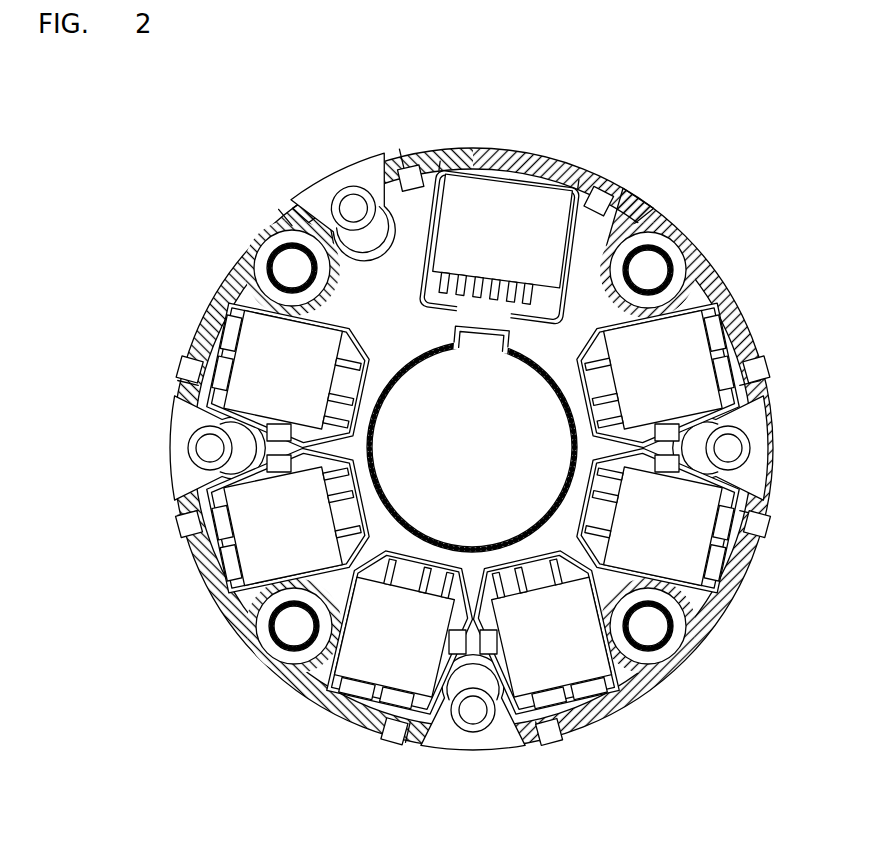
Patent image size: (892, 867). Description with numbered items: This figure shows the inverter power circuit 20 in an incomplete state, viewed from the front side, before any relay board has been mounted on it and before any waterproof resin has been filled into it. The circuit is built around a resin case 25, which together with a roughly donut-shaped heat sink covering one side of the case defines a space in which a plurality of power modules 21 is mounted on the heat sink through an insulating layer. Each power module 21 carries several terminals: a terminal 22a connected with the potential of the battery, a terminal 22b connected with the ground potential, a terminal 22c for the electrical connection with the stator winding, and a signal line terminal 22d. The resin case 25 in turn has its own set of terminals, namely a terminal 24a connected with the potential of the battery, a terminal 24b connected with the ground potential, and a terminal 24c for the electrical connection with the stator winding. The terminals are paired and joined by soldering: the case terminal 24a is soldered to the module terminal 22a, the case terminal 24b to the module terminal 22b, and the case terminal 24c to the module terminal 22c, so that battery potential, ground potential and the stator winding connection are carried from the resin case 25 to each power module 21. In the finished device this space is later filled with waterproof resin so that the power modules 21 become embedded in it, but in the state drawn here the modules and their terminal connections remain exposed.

The inverter power circuit 20 is at (579, 164).
The power module 21 is at (372, 465).
The terminal connected with the potential of the battery 22a is at (200, 322).
The terminal connected with the ground potential 22b is at (182, 418).
The terminal for electrical connection with the stator winding 22c is at (185, 380).
The signal line terminal 22d is at (380, 381).
The terminal connected with the potential of the battery 24a is at (268, 258).
The terminal connected with the ground potential 24b is at (342, 198).
The terminal for electrical connection with the stator winding 24c is at (183, 358).
The resin case 25 is at (210, 305).